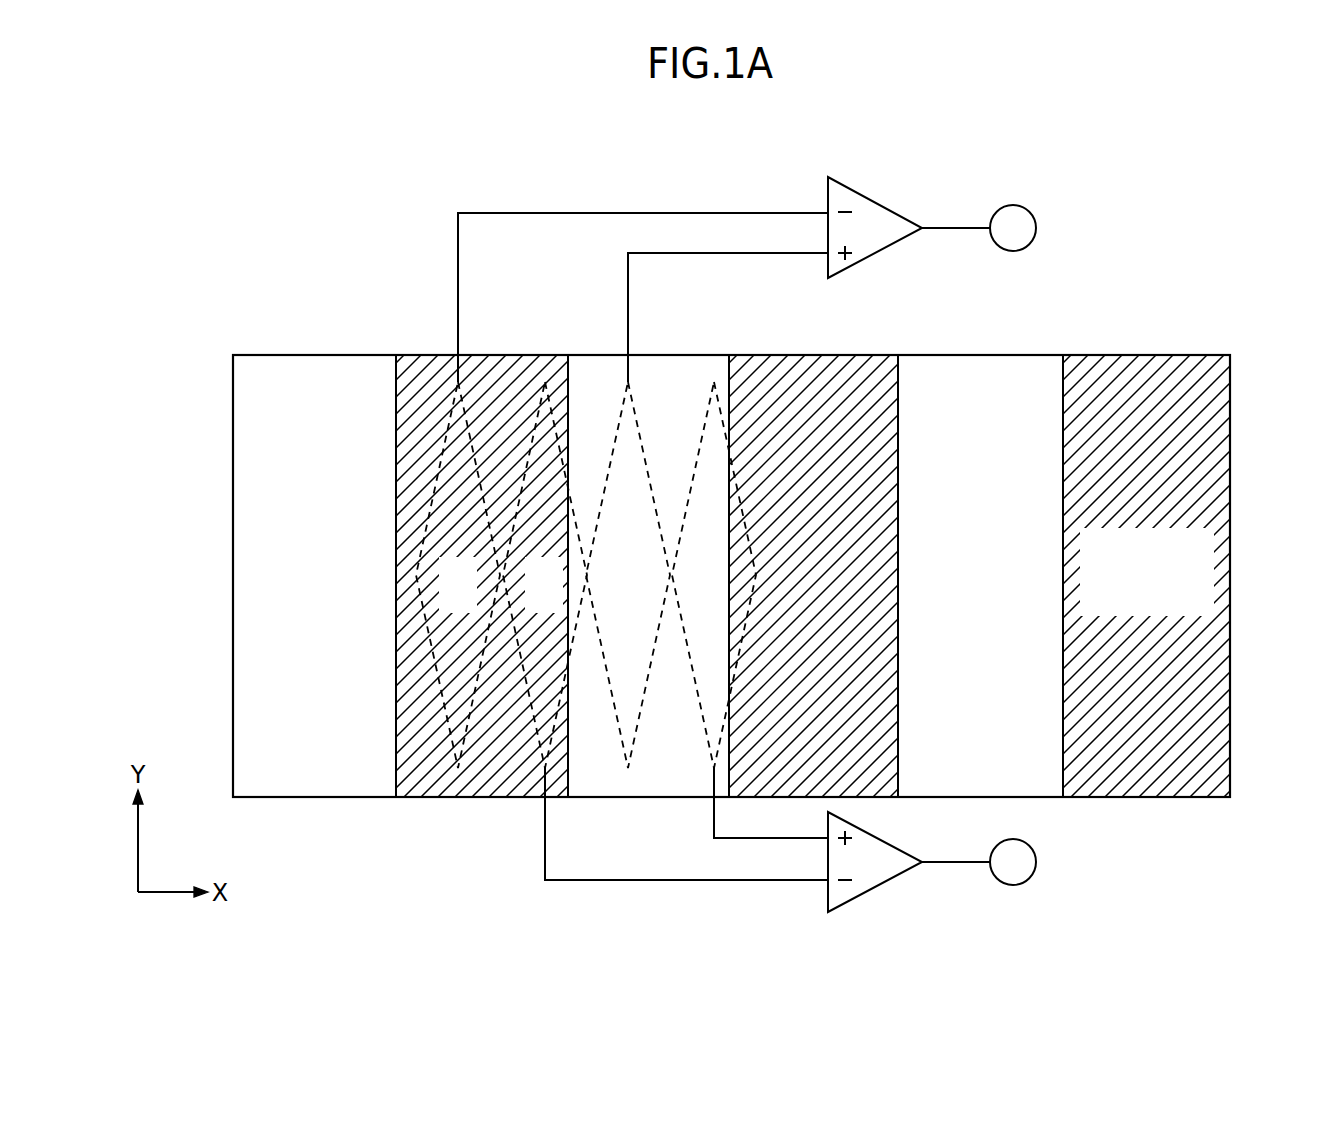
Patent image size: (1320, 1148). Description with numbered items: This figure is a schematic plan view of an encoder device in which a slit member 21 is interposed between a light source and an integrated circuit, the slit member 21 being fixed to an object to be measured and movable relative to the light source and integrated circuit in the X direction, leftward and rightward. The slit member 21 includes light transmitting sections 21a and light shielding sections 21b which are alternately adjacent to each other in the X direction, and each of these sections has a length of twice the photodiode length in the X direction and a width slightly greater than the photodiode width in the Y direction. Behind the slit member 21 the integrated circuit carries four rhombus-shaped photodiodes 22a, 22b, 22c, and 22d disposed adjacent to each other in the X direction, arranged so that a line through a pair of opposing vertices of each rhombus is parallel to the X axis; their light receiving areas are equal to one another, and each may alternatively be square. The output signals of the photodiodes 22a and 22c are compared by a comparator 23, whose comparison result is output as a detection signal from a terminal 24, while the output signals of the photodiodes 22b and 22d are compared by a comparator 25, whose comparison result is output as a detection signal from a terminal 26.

The slit member 21 is at (1231, 412).
The light transmitting section 21a is at (718, 355).
The light shielding section 21b is at (832, 355).
The photodiode 22a is at (443, 450).
The photodiode 22b is at (530, 450).
The photodiode 22c is at (613, 450).
The photodiode 22d is at (699, 450).
The comparator 23 is at (828, 190).
The terminal 24 is at (1013, 205).
The comparator 25 is at (828, 898).
The terminal 26 is at (1013, 885).